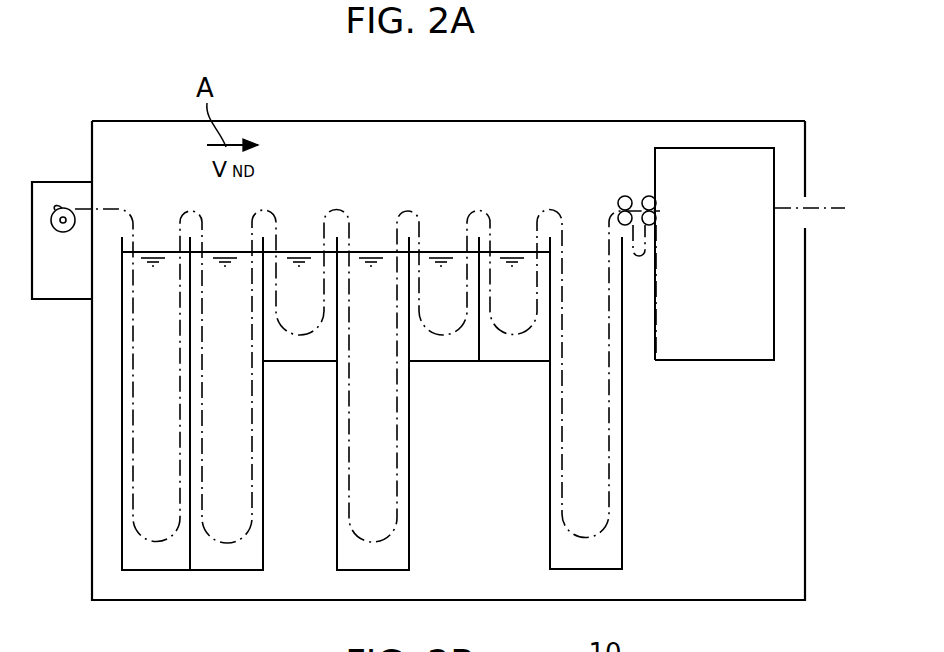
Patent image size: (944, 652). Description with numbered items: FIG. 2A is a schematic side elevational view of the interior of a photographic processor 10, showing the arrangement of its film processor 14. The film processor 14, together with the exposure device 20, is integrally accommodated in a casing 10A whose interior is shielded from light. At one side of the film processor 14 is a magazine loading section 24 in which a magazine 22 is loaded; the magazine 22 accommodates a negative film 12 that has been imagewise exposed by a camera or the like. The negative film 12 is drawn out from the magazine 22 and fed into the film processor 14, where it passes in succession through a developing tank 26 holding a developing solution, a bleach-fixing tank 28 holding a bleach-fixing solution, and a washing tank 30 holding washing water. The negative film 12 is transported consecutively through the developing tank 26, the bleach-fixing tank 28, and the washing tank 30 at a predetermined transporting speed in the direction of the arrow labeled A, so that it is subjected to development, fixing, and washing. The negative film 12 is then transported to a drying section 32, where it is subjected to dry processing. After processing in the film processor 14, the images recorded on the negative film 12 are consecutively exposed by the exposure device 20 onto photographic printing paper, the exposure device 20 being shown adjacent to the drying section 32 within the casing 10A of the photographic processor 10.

The photographic processor 10 is at (675, 95).
The casing 10A is at (555, 121).
The negative film 12 is at (123, 200).
The film processor 14 is at (497, 138).
The exposure device 20 is at (772, 193).
The magazine 22 is at (63, 232).
The magazine loading section 24 is at (70, 302).
The developing tank 26 is at (180, 560).
The bleach-fixing tank 28 is at (312, 352).
The washing tank 30 is at (500, 362).
The drying section 32 is at (590, 510).